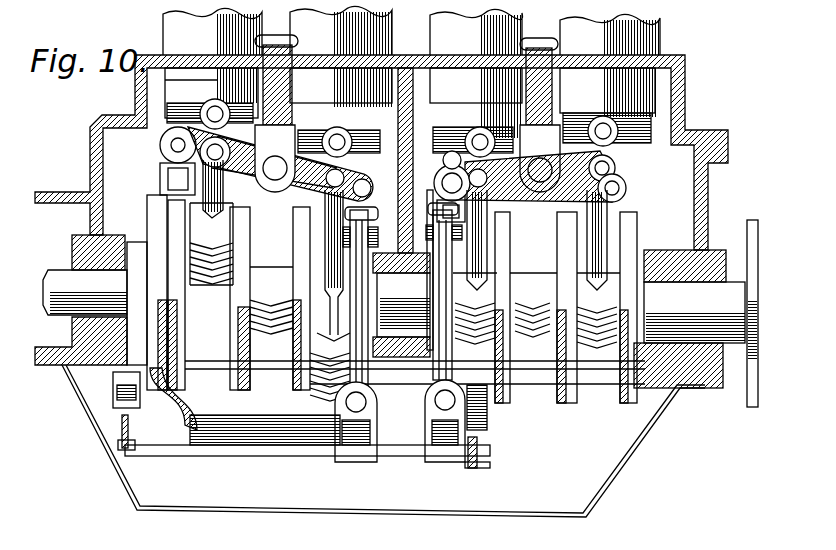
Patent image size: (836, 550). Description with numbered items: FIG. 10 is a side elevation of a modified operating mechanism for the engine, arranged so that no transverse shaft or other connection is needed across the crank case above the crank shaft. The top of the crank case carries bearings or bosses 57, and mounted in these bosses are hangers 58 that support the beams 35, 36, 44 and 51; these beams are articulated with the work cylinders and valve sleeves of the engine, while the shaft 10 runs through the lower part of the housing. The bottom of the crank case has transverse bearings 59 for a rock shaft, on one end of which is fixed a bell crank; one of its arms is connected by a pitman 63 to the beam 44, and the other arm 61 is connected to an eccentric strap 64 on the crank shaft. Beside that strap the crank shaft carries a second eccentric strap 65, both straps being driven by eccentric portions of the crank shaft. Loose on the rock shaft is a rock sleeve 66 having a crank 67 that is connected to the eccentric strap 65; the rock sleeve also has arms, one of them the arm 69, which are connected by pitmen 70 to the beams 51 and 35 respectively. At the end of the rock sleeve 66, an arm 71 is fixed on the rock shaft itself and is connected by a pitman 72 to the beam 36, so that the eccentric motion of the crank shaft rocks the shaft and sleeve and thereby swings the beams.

The shaft 10 is at (150, 282).
The beam 35 is at (303, 186).
The beam 36 is at (506, 190).
The beam 44 is at (190, 147).
The beam 51 is at (614, 188).
The bearings or bosses 57 is at (290, 93).
The hangers 58 is at (407, 158).
The transverse bearings 59 is at (120, 432).
The bell crank arm 61 is at (148, 396).
The pitman 63 is at (172, 207).
The eccentric strap 64 is at (167, 257).
The eccentric strap 65 is at (163, 262).
The rock sleeve 66 is at (280, 440).
The crank 67 is at (187, 405).
The arm 69 is at (357, 455).
The pitmen 70 is at (302, 388).
The arm 71 is at (447, 450).
The pitman 72 is at (423, 372).